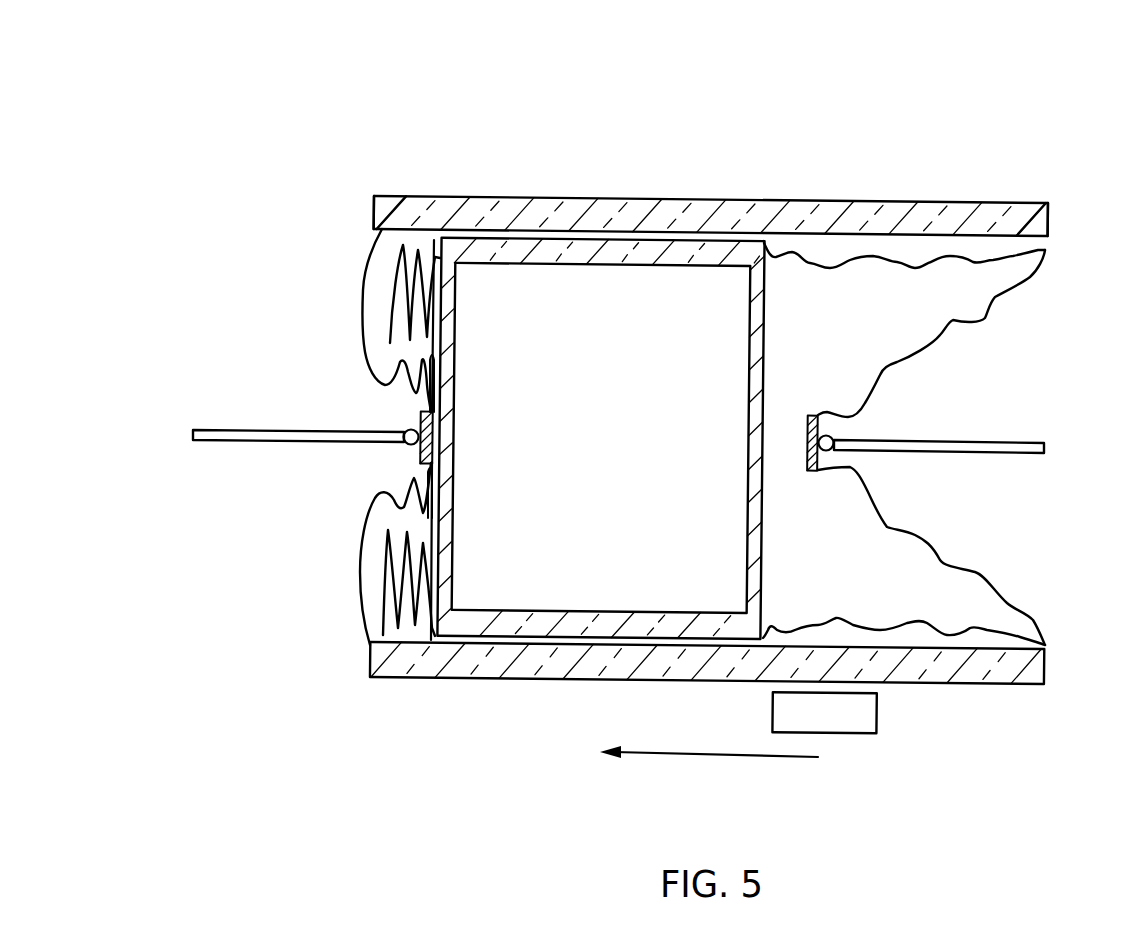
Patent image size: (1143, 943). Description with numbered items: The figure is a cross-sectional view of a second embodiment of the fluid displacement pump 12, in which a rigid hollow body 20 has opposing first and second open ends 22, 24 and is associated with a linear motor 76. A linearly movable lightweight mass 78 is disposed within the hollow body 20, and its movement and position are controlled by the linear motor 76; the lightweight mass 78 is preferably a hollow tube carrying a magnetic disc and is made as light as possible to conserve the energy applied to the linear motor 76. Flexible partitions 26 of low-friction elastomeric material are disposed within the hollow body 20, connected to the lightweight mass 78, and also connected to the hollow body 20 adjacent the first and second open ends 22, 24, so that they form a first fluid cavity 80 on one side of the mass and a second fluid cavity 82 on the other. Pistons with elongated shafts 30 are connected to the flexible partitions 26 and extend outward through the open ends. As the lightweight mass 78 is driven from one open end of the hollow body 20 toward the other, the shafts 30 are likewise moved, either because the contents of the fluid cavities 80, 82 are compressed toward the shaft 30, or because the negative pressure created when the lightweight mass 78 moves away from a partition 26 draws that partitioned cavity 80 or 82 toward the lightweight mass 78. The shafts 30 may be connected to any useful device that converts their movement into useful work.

The fluid displacement pump 12 is at (339, 117).
The rigid hollow body 20 is at (669, 212).
The first open end 22 is at (376, 224).
The second open end 24 is at (1050, 237).
The flexible partition 26 is at (391, 292).
The shaft 30 is at (222, 441).
The linear motor 76 is at (846, 737).
The lightweight mass 78 is at (520, 295).
The first fluid cavity 80 is at (378, 346).
The second fluid cavity 82 is at (800, 291).